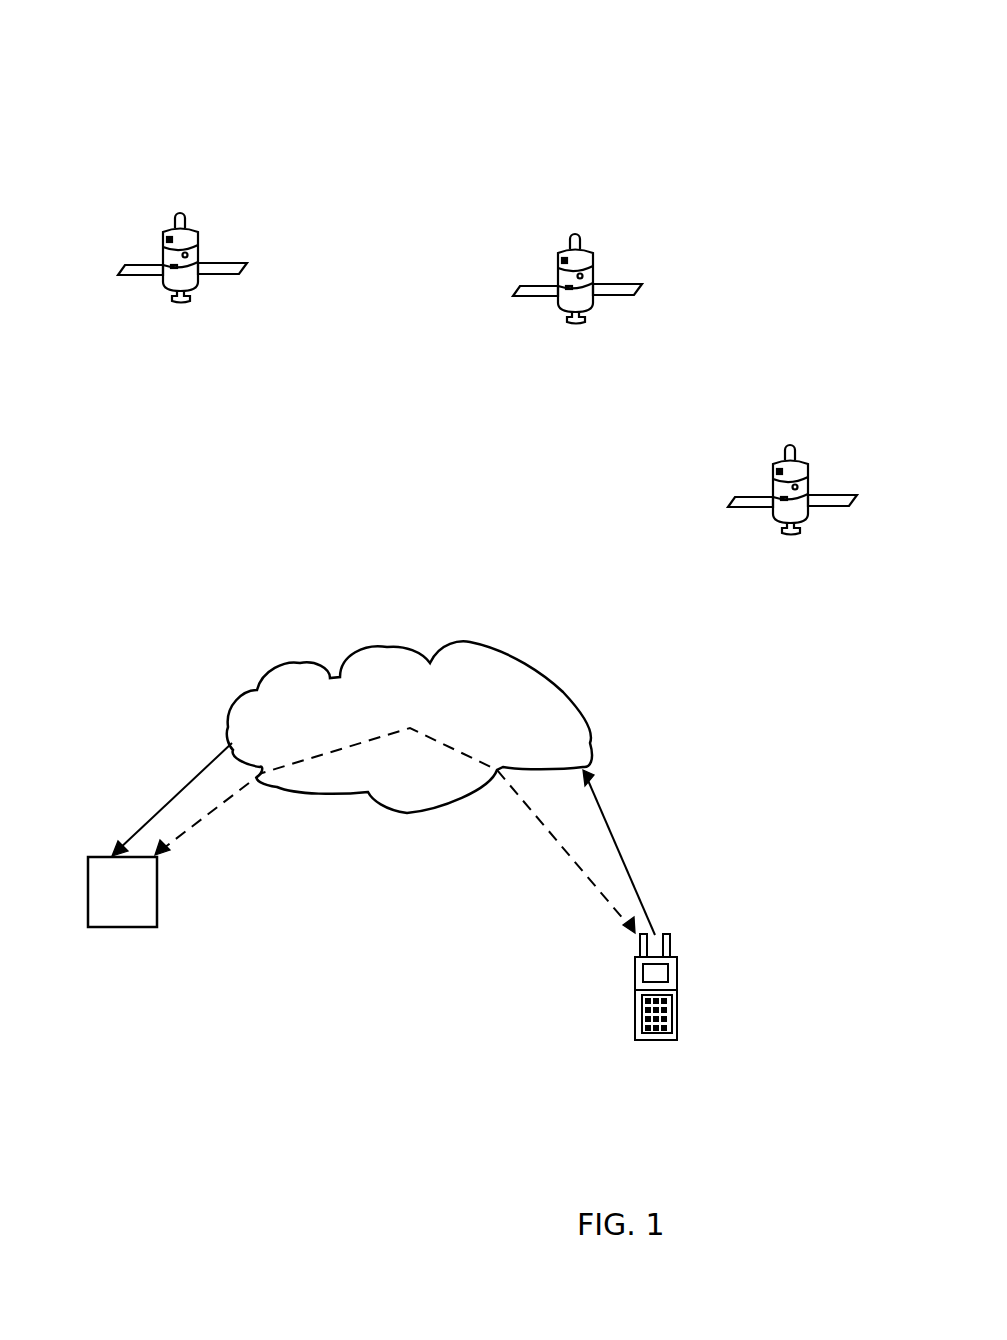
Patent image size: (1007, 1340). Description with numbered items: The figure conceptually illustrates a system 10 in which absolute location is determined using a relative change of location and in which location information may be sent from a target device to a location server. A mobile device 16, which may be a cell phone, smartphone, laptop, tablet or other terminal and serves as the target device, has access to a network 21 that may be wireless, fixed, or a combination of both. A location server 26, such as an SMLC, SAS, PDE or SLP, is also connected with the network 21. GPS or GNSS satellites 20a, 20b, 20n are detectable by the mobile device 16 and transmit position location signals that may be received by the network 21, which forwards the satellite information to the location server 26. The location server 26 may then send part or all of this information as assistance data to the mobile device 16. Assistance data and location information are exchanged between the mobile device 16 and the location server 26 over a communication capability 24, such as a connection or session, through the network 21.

The system 10 is at (646, 66).
The satellite 20a is at (213, 262).
The satellite 20b is at (607, 283).
The satellite 20n is at (760, 497).
The network 21 is at (365, 645).
The communication capability 24 is at (182, 820).
The location server 26 is at (88, 895).
The mobile device 16 is at (677, 1003).